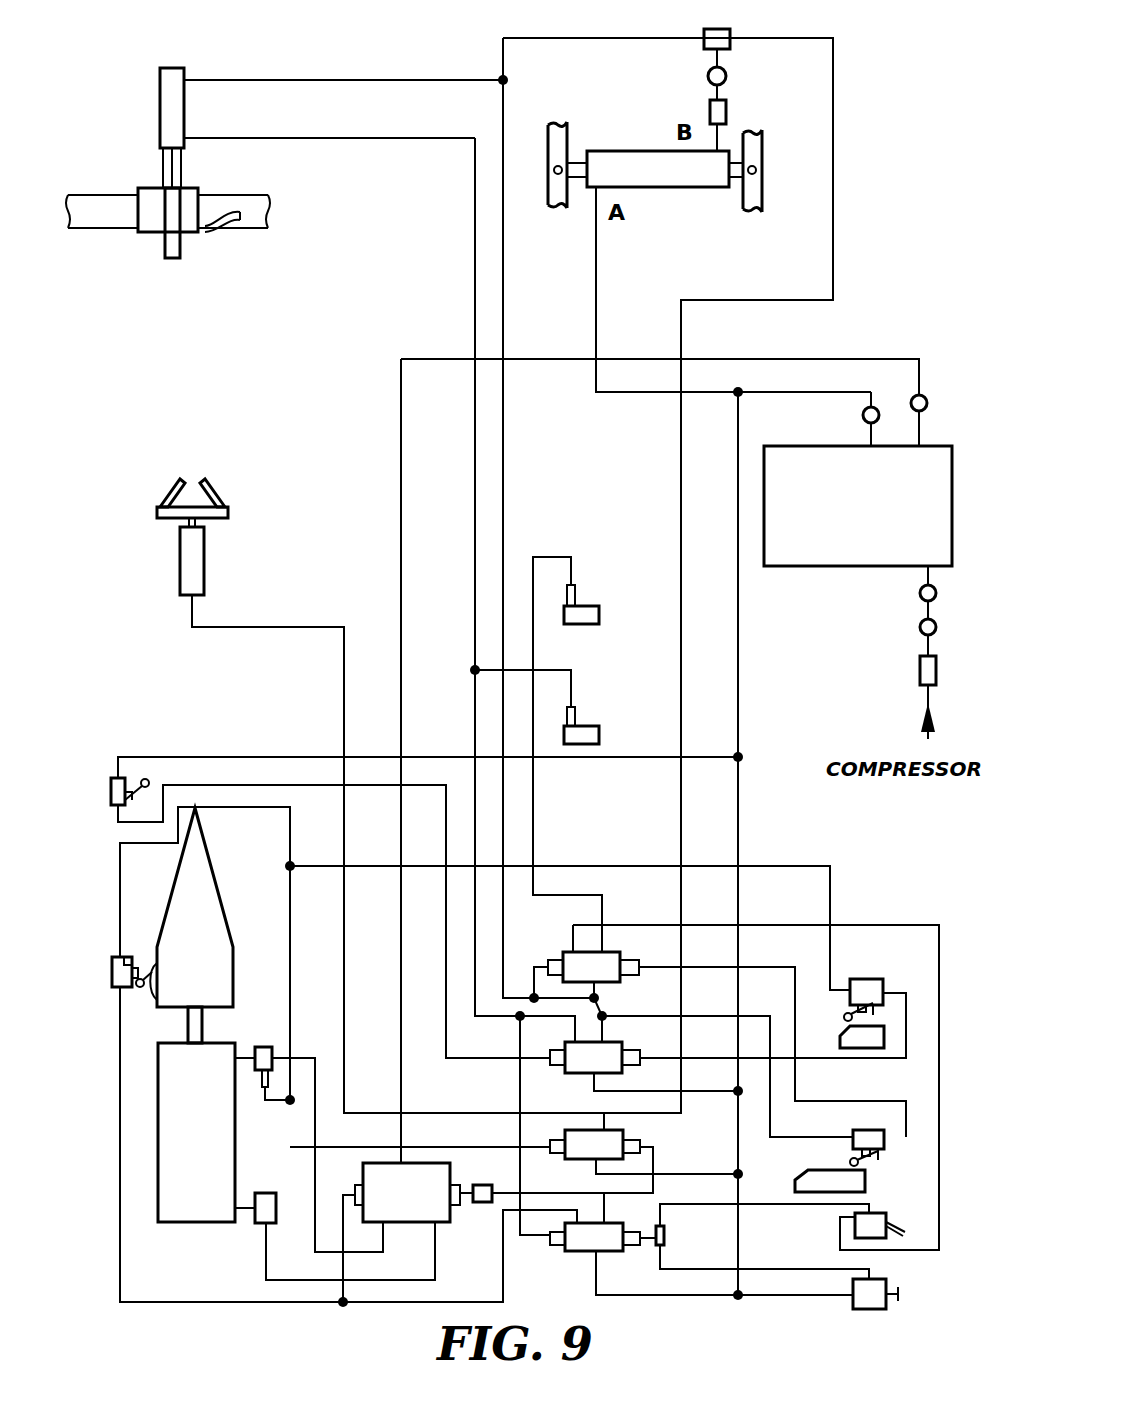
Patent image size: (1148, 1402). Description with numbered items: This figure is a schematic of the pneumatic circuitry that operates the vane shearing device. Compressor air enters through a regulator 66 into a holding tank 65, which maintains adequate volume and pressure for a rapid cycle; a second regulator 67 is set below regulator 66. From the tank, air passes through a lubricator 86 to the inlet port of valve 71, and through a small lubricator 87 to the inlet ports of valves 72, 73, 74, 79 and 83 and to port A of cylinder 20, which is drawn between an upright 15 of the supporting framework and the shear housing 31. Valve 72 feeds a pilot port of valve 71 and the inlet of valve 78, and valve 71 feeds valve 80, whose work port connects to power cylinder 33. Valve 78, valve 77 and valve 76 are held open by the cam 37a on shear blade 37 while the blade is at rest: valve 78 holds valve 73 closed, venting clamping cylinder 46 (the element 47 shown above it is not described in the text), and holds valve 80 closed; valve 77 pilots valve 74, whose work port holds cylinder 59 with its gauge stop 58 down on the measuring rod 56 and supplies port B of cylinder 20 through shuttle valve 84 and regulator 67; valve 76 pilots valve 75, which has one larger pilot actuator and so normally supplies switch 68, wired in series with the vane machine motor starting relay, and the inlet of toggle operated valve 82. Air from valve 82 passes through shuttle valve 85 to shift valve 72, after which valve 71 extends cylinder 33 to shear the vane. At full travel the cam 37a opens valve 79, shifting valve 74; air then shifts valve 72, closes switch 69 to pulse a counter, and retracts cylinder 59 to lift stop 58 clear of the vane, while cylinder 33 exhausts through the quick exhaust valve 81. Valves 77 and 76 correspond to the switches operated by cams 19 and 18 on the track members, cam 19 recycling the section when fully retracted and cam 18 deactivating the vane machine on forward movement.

The power cylinder 59 is at (184, 115).
The measuring rod 56 is at (266, 200).
The retractable stop 58 is at (180, 248).
The shuttle valve 84 is at (730, 32).
The regulator 67 is at (726, 76).
The cylinder 20 is at (662, 187).
The housing 31 is at (548, 200).
The vertical uprights 15 is at (762, 194).
The lubricator 86 is at (926, 400).
The small lubricator 87 is at (863, 418).
The holding tank 65 is at (878, 531).
The regulator 66 is at (920, 593).
The cradle 47 is at (216, 496).
The clamping cylinder 46 is at (204, 568).
The switch 68 is at (585, 606).
The switch 69 is at (585, 726).
The valve 79 is at (111, 790).
The shear blade 37 is at (214, 942).
The camming means 37a is at (153, 993).
The valve 78 is at (112, 975).
The quick exhaust valve 81 is at (262, 1047).
The power cylinder 33 is at (206, 1145).
The valve 80 is at (266, 1193).
The valve 71 is at (418, 1207).
The valve 75 is at (593, 967).
The valve 74 is at (595, 1057).
The valve 73 is at (595, 1144).
The valve 72 is at (595, 1237).
The shuttle valve 85 is at (664, 1236).
The valve 77 is at (855, 979).
The cam 19 is at (884, 1037).
The valve 76 is at (884, 1145).
The cam 18 is at (865, 1185).
The toggle operated valve 82 is at (855, 1220).
The valve 83 is at (870, 1309).